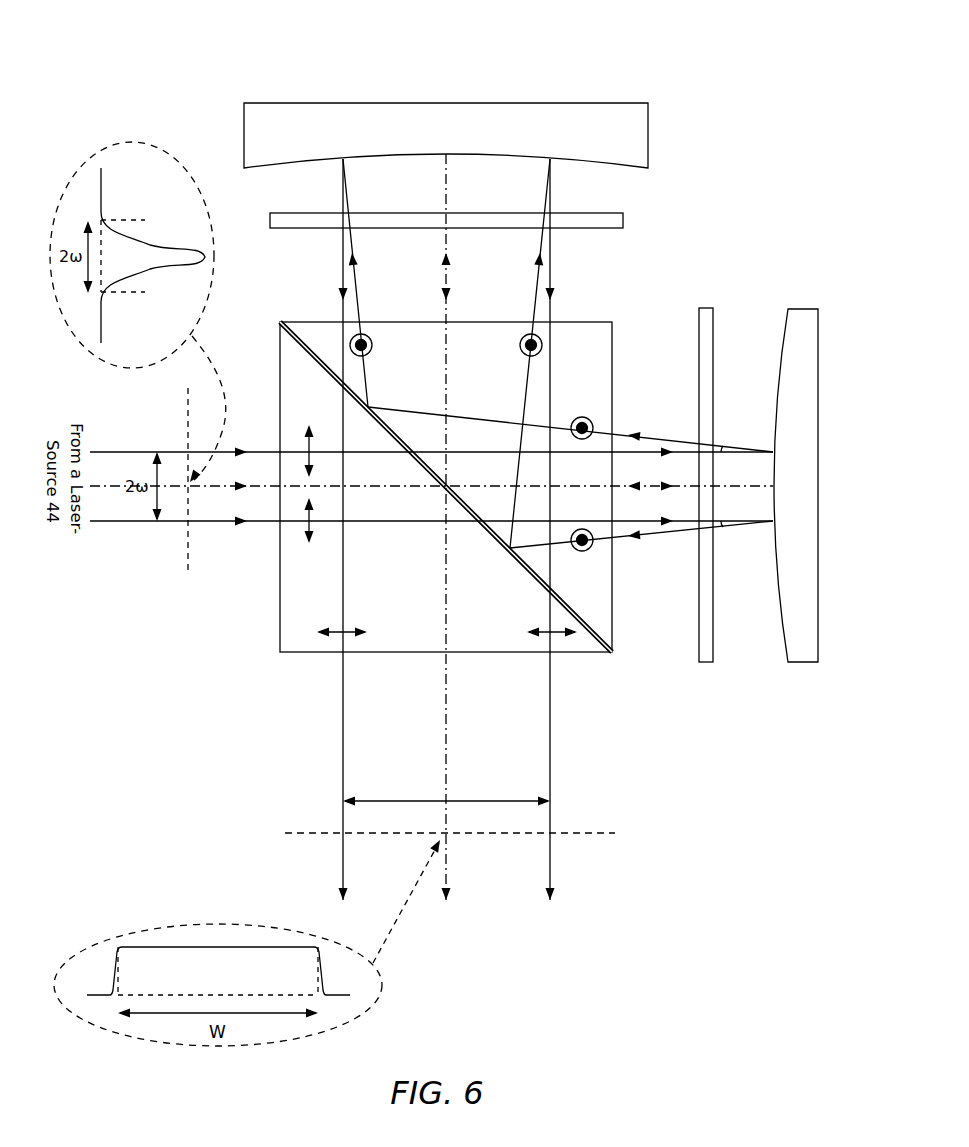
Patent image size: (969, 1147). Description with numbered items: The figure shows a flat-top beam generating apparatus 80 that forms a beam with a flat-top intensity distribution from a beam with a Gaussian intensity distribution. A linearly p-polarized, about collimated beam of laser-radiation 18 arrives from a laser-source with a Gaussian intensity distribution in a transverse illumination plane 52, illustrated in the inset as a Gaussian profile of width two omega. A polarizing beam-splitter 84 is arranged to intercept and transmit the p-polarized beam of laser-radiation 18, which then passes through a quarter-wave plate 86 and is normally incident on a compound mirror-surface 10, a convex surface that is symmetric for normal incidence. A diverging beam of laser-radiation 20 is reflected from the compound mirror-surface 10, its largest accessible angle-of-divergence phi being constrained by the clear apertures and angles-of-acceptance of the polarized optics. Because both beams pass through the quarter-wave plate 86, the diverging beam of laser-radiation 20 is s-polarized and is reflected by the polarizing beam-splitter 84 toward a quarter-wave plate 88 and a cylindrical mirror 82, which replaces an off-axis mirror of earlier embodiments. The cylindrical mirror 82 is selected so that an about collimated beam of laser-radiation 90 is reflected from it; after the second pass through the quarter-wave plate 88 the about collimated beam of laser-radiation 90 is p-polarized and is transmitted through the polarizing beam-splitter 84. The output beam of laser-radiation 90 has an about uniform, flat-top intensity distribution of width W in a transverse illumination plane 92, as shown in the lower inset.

The flat-top beam generating apparatus 80 is at (186, 74).
The cylindrical mirror 82 is at (645, 135).
The quarter-wave plate 88 is at (620, 217).
The polarizing beam-splitter 84 is at (597, 330).
The quarter-wave plate 86 is at (707, 315).
The compound mirror-surface 10 is at (778, 632).
The diverging beam of laser-radiation 20 is at (663, 426).
The beam of laser-radiation 18 is at (127, 532).
The transverse illumination plane 52 is at (188, 578).
The about collimated beam of laser-radiation 90 is at (334, 744).
The transverse illumination plane 92 is at (615, 833).